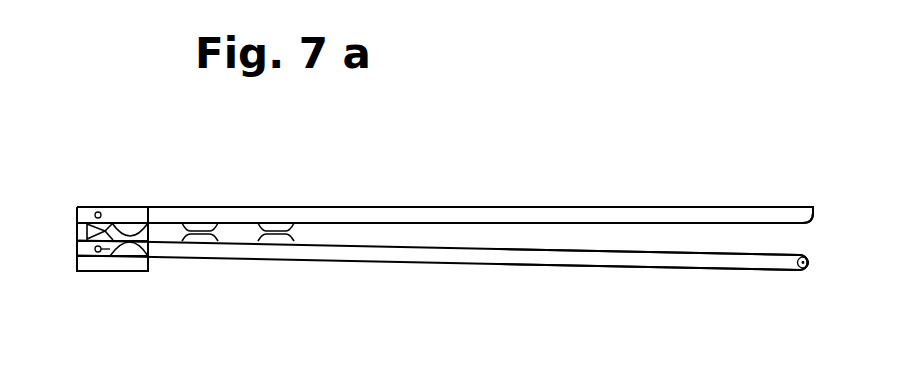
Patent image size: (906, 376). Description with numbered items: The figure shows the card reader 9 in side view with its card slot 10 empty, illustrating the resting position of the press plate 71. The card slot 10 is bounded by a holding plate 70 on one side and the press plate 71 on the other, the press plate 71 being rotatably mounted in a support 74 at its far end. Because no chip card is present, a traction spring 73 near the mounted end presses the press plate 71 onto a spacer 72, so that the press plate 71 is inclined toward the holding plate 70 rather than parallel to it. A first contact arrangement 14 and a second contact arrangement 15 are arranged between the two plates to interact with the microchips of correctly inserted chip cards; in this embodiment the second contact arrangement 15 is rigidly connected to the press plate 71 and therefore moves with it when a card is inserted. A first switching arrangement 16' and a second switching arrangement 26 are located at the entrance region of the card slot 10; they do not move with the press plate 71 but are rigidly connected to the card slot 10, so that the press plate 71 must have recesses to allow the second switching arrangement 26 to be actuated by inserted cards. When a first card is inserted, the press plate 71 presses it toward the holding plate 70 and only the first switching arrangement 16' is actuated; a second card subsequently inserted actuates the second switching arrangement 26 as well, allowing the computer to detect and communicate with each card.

The card reader 9 is at (406, 265).
The card slot 10 is at (409, 233).
The first contact arrangement 14 is at (245, 215).
The second contact arrangement 15 is at (255, 250).
The first switching arrangement 16' is at (162, 207).
The second switching arrangement 26 is at (107, 262).
The holding plate 70 is at (534, 213).
The press plate 71 is at (537, 255).
The spacer 72 is at (77, 229).
The traction spring 73 is at (116, 216).
The support 74 is at (806, 270).